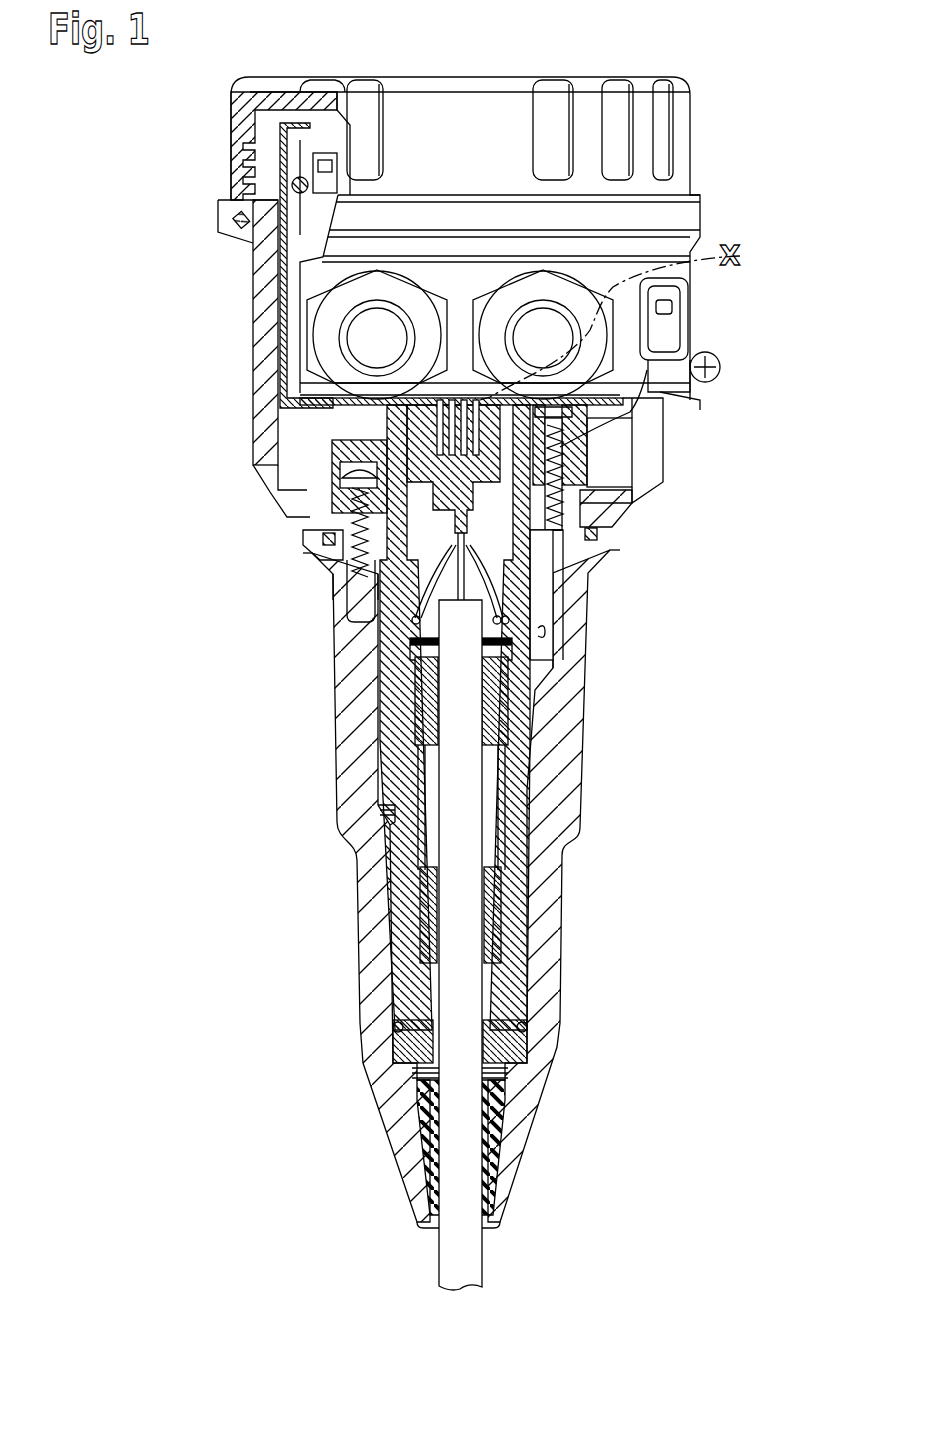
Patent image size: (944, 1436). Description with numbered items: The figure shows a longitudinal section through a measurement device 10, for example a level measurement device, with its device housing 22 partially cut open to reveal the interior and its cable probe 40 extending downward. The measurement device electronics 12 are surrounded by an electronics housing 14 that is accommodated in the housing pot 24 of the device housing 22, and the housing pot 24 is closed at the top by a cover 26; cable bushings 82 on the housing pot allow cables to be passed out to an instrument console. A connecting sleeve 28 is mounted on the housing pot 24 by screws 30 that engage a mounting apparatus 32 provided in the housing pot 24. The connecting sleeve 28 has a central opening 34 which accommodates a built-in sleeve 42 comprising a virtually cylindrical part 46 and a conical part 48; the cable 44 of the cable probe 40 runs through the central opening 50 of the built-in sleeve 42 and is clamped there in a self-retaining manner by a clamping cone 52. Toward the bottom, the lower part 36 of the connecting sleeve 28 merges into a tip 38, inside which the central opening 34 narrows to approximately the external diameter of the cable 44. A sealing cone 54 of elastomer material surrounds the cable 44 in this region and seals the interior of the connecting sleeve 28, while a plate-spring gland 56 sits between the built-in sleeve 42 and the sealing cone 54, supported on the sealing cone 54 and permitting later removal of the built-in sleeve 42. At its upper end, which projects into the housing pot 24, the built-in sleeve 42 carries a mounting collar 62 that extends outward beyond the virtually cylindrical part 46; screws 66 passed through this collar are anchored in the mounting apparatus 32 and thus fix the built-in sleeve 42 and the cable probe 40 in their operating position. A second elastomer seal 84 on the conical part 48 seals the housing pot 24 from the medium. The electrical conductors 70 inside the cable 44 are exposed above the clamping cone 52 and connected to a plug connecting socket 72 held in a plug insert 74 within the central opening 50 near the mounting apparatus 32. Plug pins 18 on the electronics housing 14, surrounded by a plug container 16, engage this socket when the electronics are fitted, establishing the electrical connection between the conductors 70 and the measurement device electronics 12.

The measurement device 10 is at (714, 44).
The measurement device electronics 12 is at (295, 233).
The electronics housing 14 is at (283, 289).
The plug container 16 is at (625, 415).
The plug pins 18 is at (462, 406).
The device housing 22 is at (655, 484).
The housing pot 24 is at (257, 322).
The cover 26 is at (245, 132).
The connecting sleeve 28 is at (345, 762).
The screws 30 is at (350, 572).
The mounting apparatus 32 is at (310, 508).
The central opening 34 is at (548, 636).
The lower part 36 is at (368, 950).
The tip 38 is at (400, 1140).
The cable probe 40 is at (350, 828).
The built-in sleeve 42 is at (412, 882).
The cable 44 is at (458, 1260).
The virtually cylindrical part 46 is at (360, 672).
The conical part 48 is at (405, 1056).
The central opening 50 is at (382, 626).
The clamping cone 52 is at (495, 713).
The sealing cone 54 is at (495, 1145).
The plate-spring gland 56 is at (506, 1074).
The mounting collar 62 is at (318, 386).
The screws 66 is at (600, 522).
The electrical conductors 70 is at (528, 576).
The plug connecting socket 72 is at (348, 434).
The plug insert 74 is at (350, 466).
The cable bushings 82 is at (530, 288).
The second elastomer seal 84 is at (395, 1027).